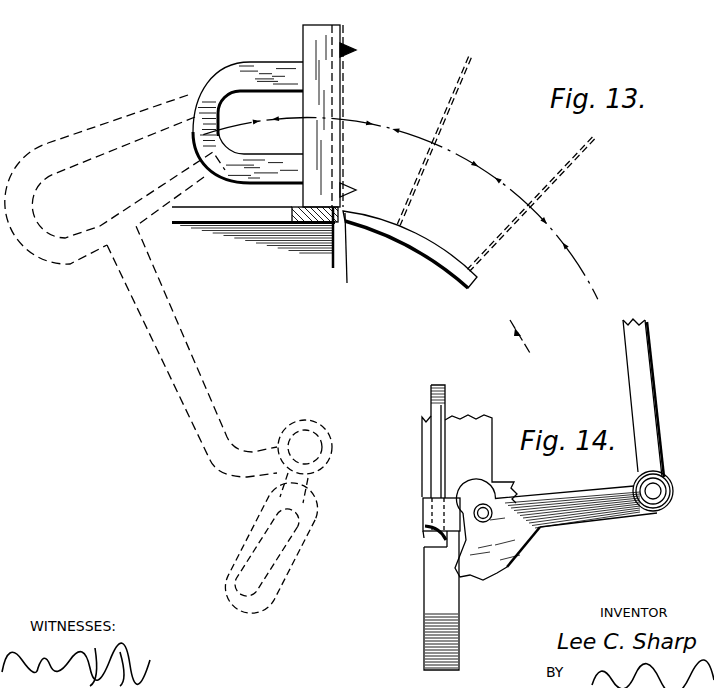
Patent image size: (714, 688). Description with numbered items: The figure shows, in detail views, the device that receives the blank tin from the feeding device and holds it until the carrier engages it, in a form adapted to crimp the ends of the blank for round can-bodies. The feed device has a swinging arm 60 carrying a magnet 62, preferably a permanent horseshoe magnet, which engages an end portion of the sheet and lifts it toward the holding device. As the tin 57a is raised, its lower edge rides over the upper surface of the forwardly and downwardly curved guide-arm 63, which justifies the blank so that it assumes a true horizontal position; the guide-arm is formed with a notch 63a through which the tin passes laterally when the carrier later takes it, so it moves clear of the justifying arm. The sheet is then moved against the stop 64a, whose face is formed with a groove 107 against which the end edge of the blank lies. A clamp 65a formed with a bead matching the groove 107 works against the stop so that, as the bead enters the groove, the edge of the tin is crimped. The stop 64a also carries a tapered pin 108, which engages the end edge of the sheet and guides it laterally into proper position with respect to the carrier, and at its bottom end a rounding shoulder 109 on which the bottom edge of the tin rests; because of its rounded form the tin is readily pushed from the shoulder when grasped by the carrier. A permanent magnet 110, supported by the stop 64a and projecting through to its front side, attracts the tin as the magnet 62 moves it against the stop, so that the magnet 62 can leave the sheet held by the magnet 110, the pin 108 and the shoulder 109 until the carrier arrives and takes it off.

In FIG. 13, the arm 60 is at (177, 353).
In FIG. 13, the magnet 62 is at (62, 262).
In FIG. 13, the guide-arm 63 is at (388, 225).
In FIG. 14, the guide-arm 63 is at (450, 602).
In FIG. 13, the notch 63a is at (354, 254).
In FIG. 14, the notch 63a is at (435, 538).
In FIG. 13, the stop 64a is at (320, 105).
In FIG. 14, the stop 64a is at (428, 512).
In FIG. 14, the clamp 65a is at (508, 550).
In FIG. 13, the groove 107 is at (347, 127).
In FIG. 14, the groove 107 is at (425, 537).
In FIG. 13, the tapered pin 108 is at (350, 50).
In FIG. 14, the tapered pin 108 is at (447, 547).
In FIG. 13, the rounding shoulder 109 is at (330, 222).
In FIG. 14, the rounding shoulder 109 is at (428, 538).
In FIG. 13, the permanent magnet 110 is at (267, 54).
In FIG. 14, the permanent magnet 110 is at (437, 458).
In FIG. 13, the tin 57a is at (343, 78).